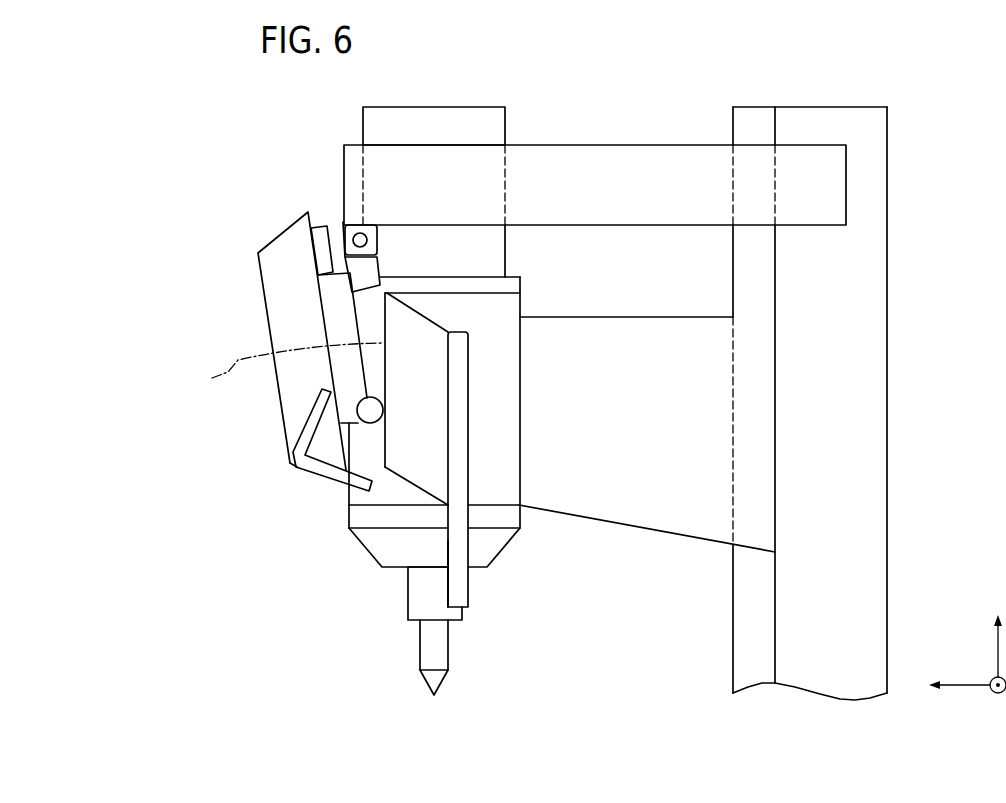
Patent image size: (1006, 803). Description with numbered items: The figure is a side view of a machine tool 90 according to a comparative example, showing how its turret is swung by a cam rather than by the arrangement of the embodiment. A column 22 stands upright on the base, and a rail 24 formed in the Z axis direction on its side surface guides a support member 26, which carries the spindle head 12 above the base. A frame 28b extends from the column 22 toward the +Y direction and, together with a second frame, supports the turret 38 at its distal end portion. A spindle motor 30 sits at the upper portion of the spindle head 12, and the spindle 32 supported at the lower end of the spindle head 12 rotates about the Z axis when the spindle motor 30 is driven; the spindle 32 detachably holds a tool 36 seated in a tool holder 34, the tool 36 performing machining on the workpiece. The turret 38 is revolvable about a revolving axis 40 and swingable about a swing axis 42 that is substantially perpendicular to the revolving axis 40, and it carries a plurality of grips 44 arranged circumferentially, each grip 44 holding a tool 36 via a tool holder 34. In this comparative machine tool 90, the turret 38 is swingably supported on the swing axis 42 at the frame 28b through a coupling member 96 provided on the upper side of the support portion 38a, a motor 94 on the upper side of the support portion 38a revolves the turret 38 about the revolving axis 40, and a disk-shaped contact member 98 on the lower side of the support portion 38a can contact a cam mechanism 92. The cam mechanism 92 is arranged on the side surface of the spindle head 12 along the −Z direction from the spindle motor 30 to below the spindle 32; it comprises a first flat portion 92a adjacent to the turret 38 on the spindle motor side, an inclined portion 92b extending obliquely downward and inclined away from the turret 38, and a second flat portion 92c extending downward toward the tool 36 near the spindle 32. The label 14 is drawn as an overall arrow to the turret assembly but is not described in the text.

The machine tool 90 is at (300, 97).
The spindle motor 30 is at (476, 117).
The frame 28b is at (617, 153).
The column 22 is at (868, 268).
The rail 24 is at (745, 266).
The spindle head 12 is at (508, 408).
The cam mechanism 92 is at (470, 372).
The first flat portion 92a is at (382, 367).
The inclined portion 92b is at (403, 481).
The second flat portion 92c is at (448, 540).
The spindle 32 is at (492, 542).
The tool holder 34 is at (420, 600).
The tool 36 is at (428, 645).
The support member 26 is at (645, 512).
The pressing unit 14 is at (278, 203).
The turret 38 is at (268, 268).
The support portion 38a is at (333, 303).
The motor 94 is at (318, 226).
The swing axis 42 is at (367, 240).
The coupling member 96 is at (367, 272).
The contact member 98 is at (374, 407).
The grip 44 is at (315, 465).
The revolving axis 40 is at (282, 368).